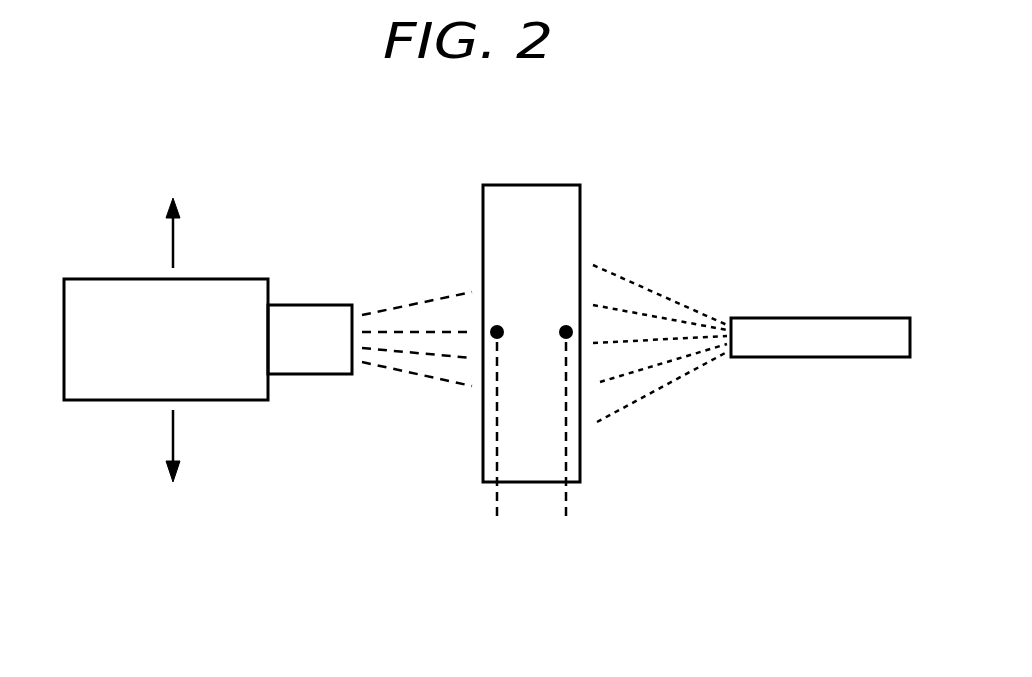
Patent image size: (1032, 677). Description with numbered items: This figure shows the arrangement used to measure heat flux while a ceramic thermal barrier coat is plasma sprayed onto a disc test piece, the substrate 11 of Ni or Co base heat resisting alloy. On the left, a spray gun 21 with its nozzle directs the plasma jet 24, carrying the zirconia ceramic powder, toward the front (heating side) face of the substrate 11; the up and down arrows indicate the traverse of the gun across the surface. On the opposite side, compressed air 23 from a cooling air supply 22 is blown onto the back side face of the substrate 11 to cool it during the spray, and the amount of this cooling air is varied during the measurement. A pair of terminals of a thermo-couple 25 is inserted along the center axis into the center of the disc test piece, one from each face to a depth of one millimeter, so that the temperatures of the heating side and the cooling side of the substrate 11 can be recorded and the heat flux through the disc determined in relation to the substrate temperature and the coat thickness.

The light source unit 21 is at (101, 287).
The light beam 24 is at (420, 303).
The substrate 11 is at (549, 188).
The thermo-couple 25 is at (572, 527).
The converging light beam 23 is at (658, 297).
The light receiving element 22 is at (845, 323).